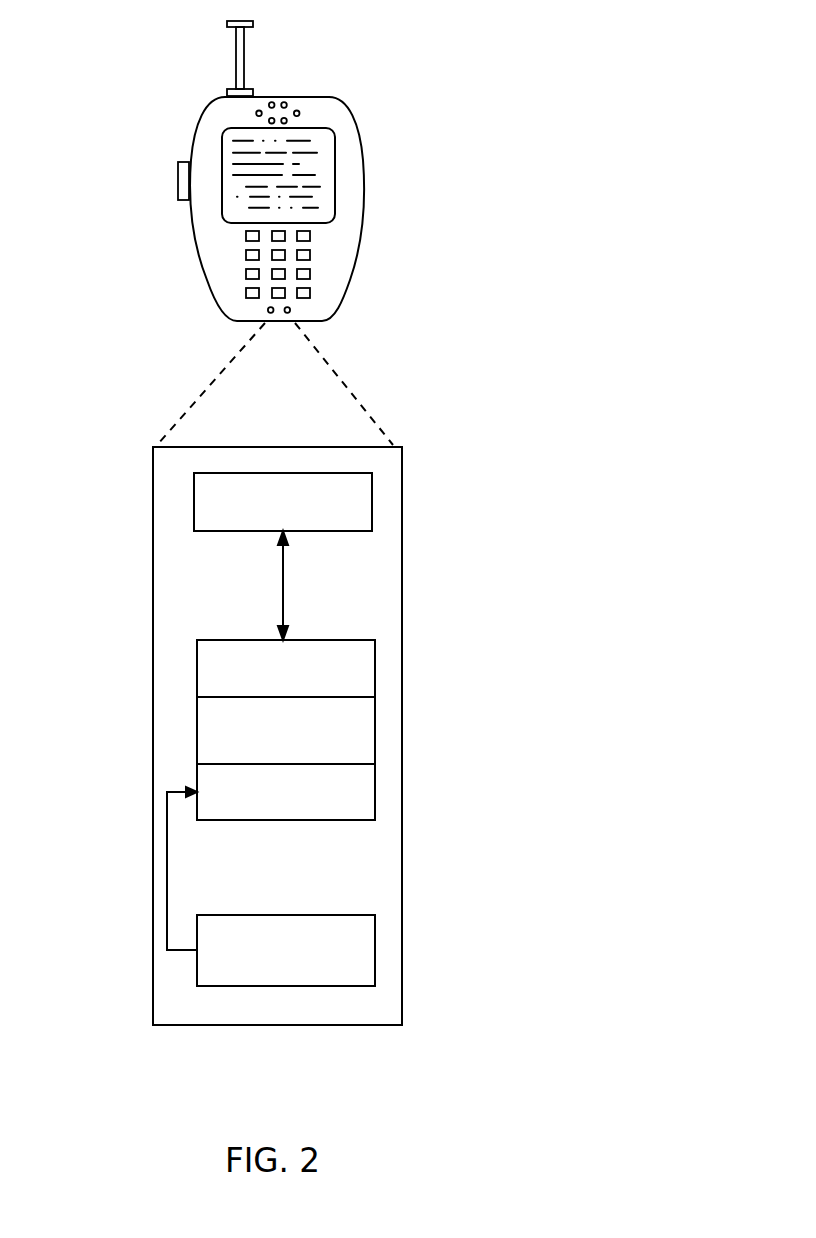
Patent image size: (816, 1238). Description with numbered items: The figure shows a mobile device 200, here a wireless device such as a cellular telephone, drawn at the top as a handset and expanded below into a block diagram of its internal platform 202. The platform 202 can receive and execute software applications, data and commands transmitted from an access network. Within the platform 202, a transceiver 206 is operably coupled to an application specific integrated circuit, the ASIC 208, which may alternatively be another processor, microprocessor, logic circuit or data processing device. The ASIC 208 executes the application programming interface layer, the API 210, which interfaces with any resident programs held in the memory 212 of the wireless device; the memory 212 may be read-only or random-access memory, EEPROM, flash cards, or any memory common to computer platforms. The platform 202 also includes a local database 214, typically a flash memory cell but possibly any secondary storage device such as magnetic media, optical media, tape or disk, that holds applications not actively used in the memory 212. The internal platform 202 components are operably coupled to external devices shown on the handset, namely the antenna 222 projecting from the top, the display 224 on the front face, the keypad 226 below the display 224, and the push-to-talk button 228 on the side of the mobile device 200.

The mobile device 200 is at (345, 298).
The platform 202 is at (153, 641).
The transceiver 206 is at (372, 503).
The application specific integrated circuit (ASIC) 208 is at (375, 676).
The application programming interface (API) layer 210 is at (375, 724).
The memory 212 is at (375, 792).
The local database 214 is at (375, 934).
The antenna 222 is at (244, 36).
The display 224 is at (335, 163).
The keypad 226 is at (310, 255).
The push-to-talk button 228 is at (178, 172).